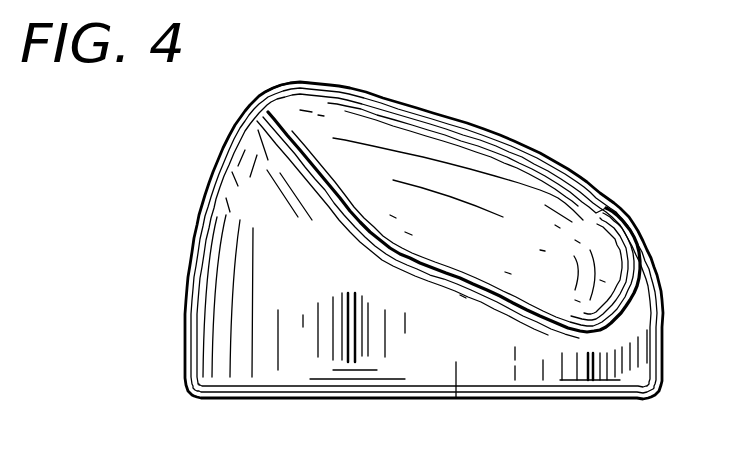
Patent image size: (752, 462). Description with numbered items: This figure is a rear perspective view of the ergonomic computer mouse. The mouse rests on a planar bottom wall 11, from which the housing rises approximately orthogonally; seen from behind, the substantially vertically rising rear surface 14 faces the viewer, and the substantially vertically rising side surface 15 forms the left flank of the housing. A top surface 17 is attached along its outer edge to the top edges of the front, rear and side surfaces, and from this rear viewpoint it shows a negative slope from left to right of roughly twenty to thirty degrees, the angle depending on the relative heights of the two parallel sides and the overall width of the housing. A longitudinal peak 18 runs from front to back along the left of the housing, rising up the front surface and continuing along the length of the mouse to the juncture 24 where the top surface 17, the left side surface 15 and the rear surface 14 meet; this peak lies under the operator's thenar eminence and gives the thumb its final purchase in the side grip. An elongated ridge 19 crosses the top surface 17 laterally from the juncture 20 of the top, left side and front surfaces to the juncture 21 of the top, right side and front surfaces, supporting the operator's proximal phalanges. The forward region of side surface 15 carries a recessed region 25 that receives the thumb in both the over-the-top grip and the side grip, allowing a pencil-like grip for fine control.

The planar bottom wall 11 is at (302, 405).
The rear surface 14 is at (456, 362).
The side surface 15 is at (185, 282).
The top surface 17 is at (529, 228).
The peak 18 is at (301, 190).
The elongated ridge 19 is at (455, 120).
The juncture 20 is at (262, 88).
The juncture 21 is at (632, 218).
The juncture 24 is at (332, 245).
The recessed region 25 is at (222, 151).